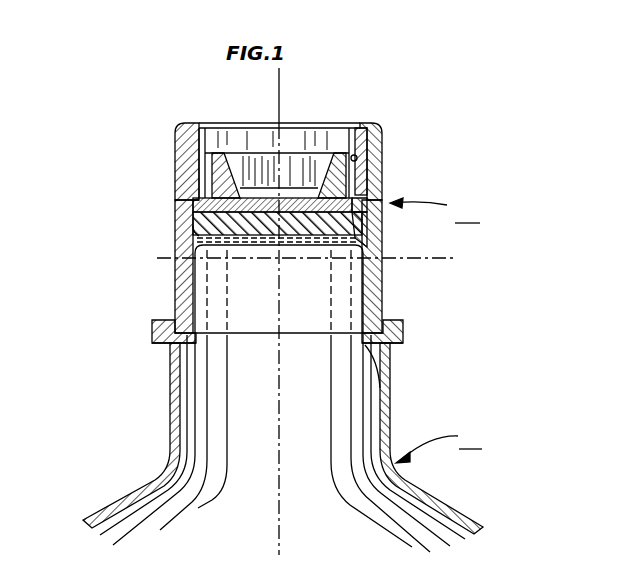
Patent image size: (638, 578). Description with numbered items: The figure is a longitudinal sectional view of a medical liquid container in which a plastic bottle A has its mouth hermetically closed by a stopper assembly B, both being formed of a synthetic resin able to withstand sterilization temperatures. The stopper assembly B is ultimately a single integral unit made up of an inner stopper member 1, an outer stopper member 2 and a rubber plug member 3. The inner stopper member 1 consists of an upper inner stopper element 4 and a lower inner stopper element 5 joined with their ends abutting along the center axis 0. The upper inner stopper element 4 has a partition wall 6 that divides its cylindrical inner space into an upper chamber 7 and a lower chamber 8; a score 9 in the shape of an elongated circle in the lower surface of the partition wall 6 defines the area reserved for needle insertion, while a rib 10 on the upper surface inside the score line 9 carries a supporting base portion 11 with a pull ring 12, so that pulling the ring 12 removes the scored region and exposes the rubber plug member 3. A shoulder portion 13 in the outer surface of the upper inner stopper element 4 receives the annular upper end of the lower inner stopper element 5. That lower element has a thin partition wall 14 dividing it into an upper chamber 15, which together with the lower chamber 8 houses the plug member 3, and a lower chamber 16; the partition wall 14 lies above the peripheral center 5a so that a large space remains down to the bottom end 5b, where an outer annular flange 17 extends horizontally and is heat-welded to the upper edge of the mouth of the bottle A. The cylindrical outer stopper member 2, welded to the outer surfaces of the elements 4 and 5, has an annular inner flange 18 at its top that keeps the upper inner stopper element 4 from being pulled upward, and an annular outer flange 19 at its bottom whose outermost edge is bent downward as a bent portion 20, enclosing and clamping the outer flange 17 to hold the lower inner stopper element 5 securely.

The center axis 0 is at (280, 118).
The inner stopper member 1 is at (175, 138).
The outer stopper member 2 is at (174, 223).
The plug member 3 is at (309, 236).
The upper inner stopper element 4 is at (202, 126).
The lower inner stopper element 5 is at (383, 264).
The peripheral center 5a is at (320, 260).
The bottom end 5b is at (385, 393).
The partition wall 6 is at (348, 196).
The upper chamber 7 is at (358, 157).
The lower chamber 8 is at (368, 226).
The score 9 is at (187, 222).
The rib 10 is at (228, 194).
The supporting base portion 11 is at (214, 156).
The pull ring 12 is at (331, 160).
The shoulder portion 13 is at (186, 181).
The partition wall 14 is at (255, 246).
The upper chamber 15 is at (383, 217).
The lower chamber 16 is at (177, 319).
The outer annular flange 17 is at (155, 345).
The annular inner flange 18 is at (365, 124).
The annular outer flange 19 is at (404, 326).
The bent portion 20 is at (391, 344).
The bottle A is at (439, 444).
The stopper assembly B is at (435, 211).